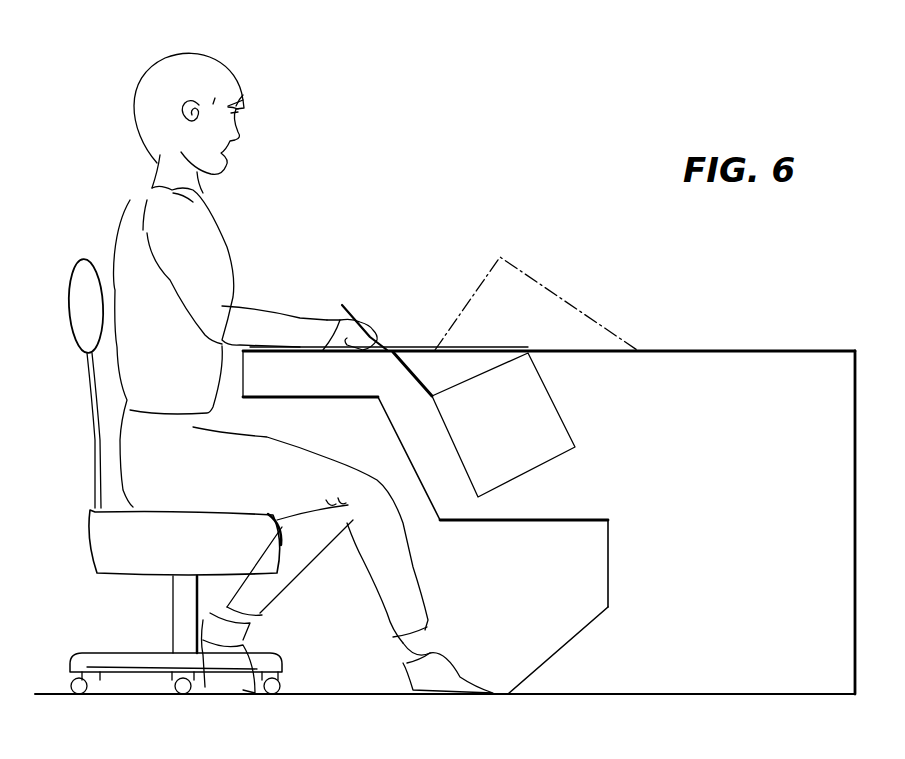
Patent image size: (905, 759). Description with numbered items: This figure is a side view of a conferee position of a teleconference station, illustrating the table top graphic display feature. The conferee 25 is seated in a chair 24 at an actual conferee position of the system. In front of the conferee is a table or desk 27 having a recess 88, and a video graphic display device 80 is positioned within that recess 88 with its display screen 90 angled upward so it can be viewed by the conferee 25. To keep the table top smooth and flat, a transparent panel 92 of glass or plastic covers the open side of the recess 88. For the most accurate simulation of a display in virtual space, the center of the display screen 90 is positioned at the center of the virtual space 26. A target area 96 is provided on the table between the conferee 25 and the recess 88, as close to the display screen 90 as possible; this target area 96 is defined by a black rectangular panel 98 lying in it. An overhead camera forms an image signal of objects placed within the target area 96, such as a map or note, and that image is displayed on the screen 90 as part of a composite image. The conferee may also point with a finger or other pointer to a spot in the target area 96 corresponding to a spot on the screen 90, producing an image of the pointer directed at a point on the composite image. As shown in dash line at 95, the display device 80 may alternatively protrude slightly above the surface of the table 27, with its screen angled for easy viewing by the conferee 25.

The chair 24 is at (78, 283).
The conferee 25 is at (289, 373).
The virtual space 26 is at (549, 448).
The table 27 is at (332, 375).
The video graphic display device 80 is at (560, 422).
The recess 88 is at (424, 365).
The display screen 90 is at (482, 372).
The transparent panel 92 is at (498, 351).
The protruding display position (dash line) 95 is at (533, 272).
The target area 96 is at (305, 347).
The black rectangular panel 98 is at (348, 340).